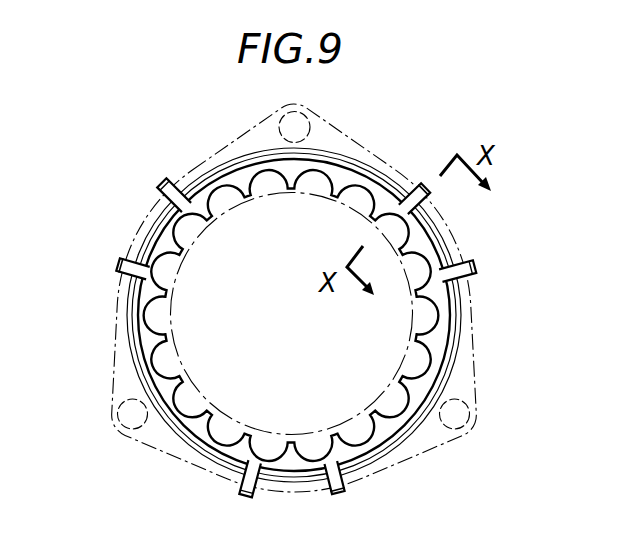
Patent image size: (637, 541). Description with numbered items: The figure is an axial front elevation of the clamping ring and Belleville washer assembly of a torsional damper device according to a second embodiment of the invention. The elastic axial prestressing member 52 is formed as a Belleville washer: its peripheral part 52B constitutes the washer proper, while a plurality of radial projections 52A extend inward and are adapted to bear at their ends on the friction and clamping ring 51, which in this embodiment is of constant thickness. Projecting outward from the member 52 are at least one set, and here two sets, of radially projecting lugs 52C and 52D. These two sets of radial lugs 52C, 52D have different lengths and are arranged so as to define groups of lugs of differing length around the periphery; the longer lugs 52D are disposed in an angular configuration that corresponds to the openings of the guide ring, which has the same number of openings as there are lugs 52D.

The friction and clamping ring 51 is at (373, 153).
The elastic axial prestressing member 52 is at (460, 378).
The radial projections 52A is at (334, 432).
The peripheral part 52B is at (458, 336).
The radial lugs 52C is at (431, 189).
The radial lugs 52D is at (159, 183).